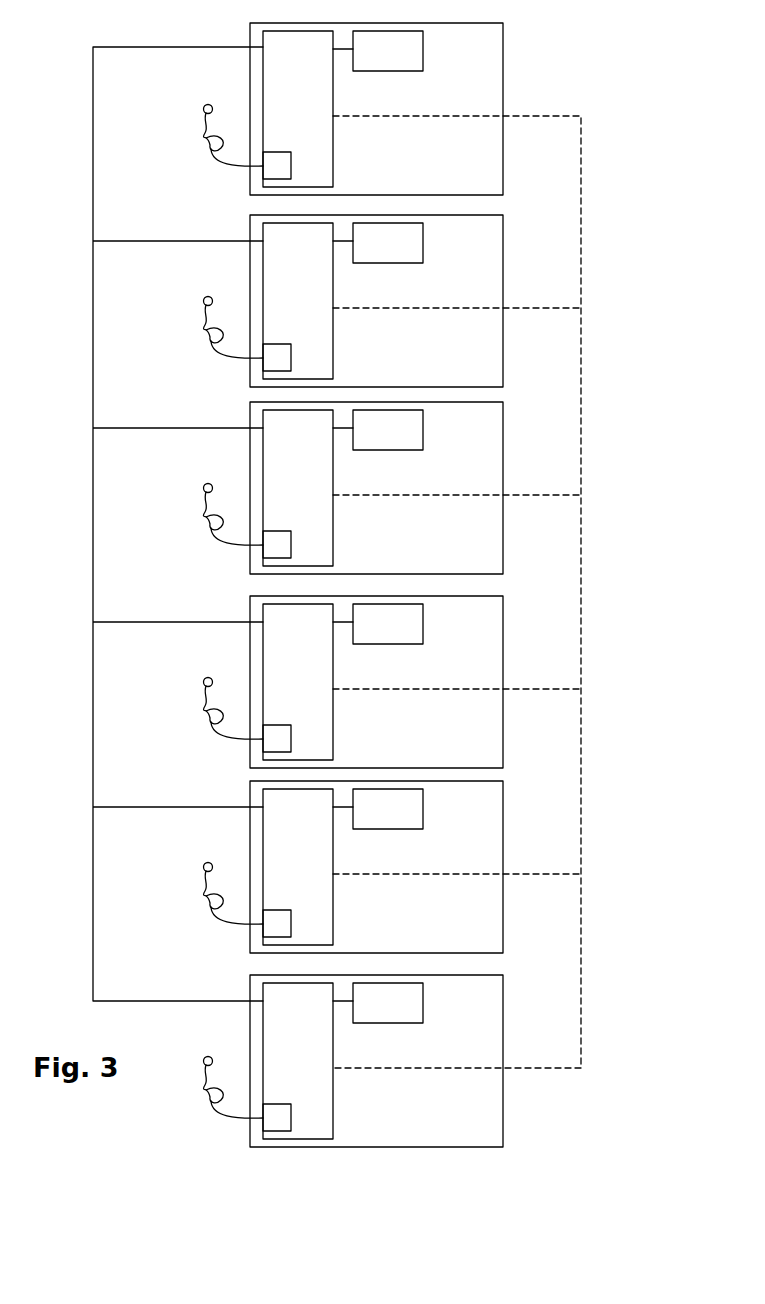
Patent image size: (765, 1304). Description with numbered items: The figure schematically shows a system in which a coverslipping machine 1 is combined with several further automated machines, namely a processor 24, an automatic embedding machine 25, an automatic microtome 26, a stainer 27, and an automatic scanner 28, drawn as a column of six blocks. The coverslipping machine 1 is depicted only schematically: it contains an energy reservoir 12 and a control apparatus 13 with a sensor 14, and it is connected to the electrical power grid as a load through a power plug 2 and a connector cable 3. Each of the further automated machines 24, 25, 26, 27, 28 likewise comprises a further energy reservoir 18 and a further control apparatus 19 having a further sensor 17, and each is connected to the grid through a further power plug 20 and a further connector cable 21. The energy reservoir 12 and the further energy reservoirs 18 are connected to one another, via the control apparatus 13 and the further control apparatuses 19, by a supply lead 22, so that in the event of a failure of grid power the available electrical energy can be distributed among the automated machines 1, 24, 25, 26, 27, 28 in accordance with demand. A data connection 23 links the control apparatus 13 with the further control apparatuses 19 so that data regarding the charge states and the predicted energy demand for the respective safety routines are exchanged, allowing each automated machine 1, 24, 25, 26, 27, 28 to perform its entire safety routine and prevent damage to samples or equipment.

The coverslipping machine 1 is at (545, 67).
The power plug 2 is at (212, 89).
The connector cable 3 is at (220, 540).
The energy reservoir 12 is at (417, 46).
The control apparatus 13 is at (333, 97).
The sensor 14 is at (282, 151).
The further sensor 17 is at (290, 727).
The further energy reservoir 18 is at (413, 628).
The further control apparatus 19 is at (333, 681).
The further power plug 20 is at (224, 688).
The further connector cable 21 is at (220, 733).
The supply lead 22 is at (93, 147).
The data connection 23 is at (581, 172).
The processor 24 is at (545, 259).
The automatic embedding machine 25 is at (545, 421).
The automatic microtome 26 is at (545, 620).
The stainer 27 is at (543, 805).
The automatic scanner 28 is at (543, 1000).